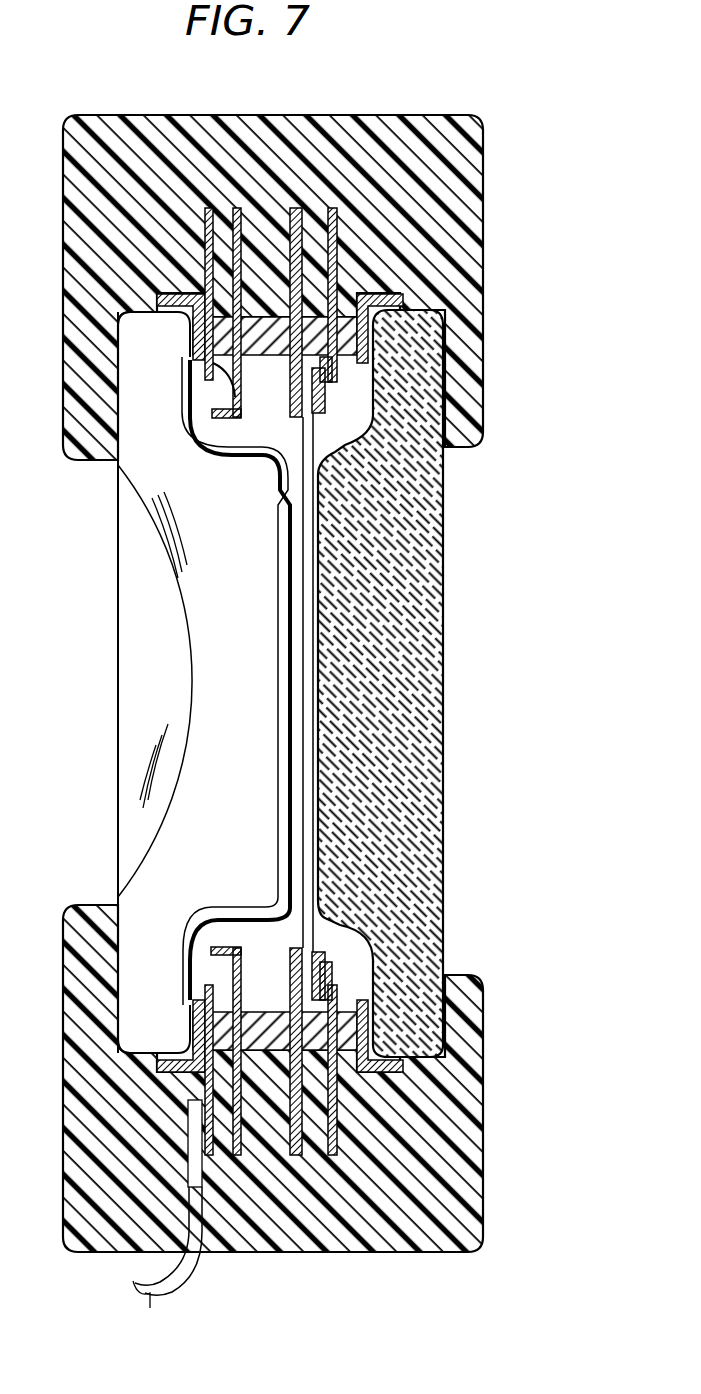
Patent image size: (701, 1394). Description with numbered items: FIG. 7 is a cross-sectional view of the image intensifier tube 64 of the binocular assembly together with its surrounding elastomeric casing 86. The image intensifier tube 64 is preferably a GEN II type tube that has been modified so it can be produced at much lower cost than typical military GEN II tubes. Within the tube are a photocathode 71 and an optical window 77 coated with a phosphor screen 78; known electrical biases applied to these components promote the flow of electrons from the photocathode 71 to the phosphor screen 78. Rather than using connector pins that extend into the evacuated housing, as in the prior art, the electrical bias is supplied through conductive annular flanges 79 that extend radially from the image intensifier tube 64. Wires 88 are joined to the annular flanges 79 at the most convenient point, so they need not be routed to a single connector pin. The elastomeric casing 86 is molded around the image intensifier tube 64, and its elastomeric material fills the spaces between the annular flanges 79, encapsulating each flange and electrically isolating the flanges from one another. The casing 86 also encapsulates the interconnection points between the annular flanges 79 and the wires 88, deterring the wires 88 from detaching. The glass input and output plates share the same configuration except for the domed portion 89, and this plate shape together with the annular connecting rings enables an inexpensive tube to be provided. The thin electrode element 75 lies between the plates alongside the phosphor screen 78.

The image intensifier tube 64 is at (460, 537).
The photocathode 71 is at (318, 683).
The piezoelectric element 75 is at (305, 568).
The optical window 77 is at (172, 525).
The phosphor screen 78 is at (283, 751).
The conductive annular flanges 79 is at (296, 208).
The elastomeric casing 86 is at (477, 227).
The wires 88 is at (428, 792).
The domed portion 89 is at (132, 688).